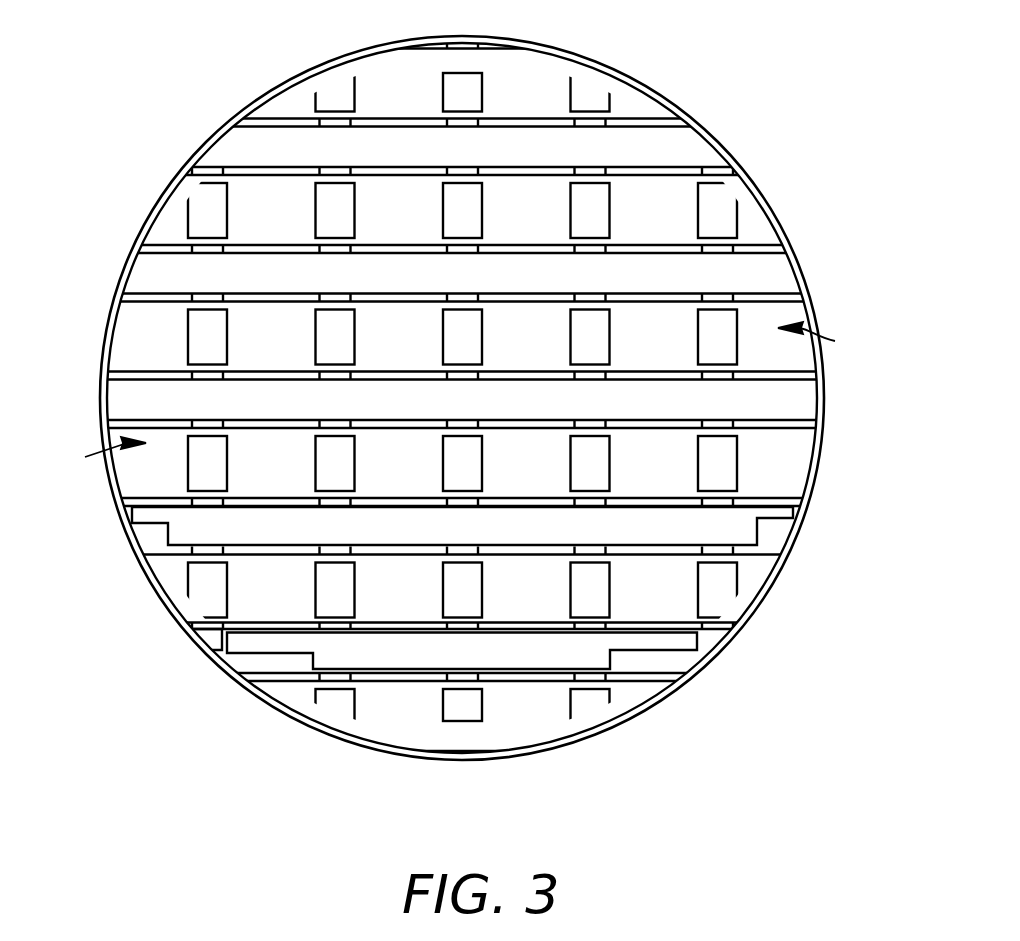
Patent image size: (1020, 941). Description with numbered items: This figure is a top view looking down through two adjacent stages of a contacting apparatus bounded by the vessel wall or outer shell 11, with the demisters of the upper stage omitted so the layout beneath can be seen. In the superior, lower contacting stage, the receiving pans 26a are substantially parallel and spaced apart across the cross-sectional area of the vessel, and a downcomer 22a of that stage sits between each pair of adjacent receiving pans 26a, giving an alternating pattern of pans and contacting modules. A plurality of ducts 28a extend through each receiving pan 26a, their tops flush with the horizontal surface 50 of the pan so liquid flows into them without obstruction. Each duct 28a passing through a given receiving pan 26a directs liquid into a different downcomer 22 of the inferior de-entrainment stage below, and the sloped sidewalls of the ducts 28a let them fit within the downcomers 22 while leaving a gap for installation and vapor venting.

The outer shell 11 is at (104, 323).
The downcomer 22 is at (203, 552).
The downcomer 22a is at (670, 150).
The receiving pan 26a is at (459, 398).
The duct 28a is at (355, 93).
The horizontal surface 50 is at (541, 109).